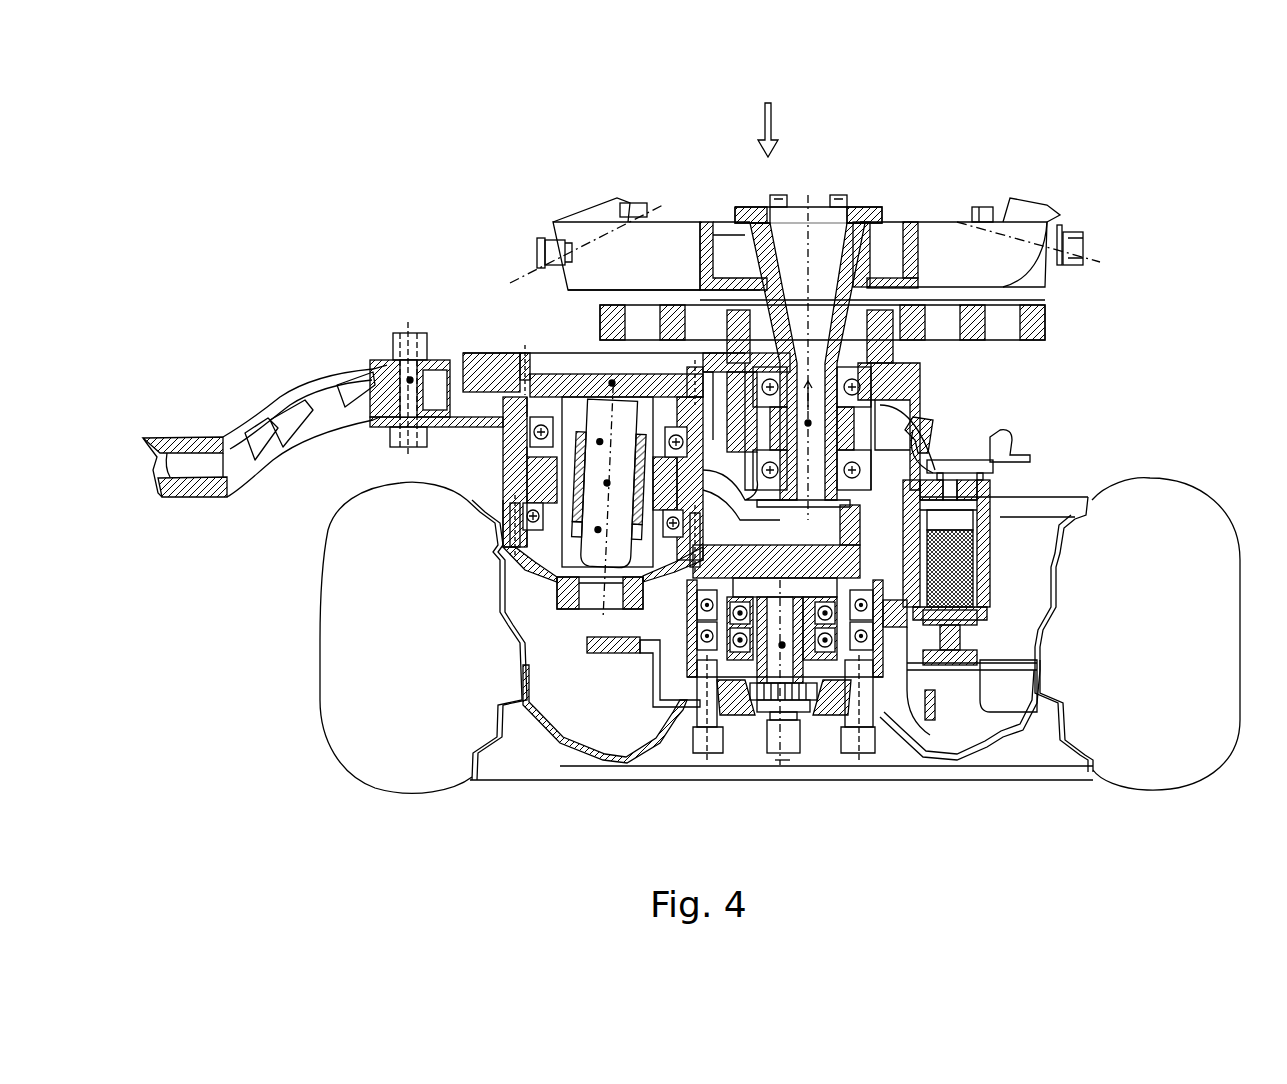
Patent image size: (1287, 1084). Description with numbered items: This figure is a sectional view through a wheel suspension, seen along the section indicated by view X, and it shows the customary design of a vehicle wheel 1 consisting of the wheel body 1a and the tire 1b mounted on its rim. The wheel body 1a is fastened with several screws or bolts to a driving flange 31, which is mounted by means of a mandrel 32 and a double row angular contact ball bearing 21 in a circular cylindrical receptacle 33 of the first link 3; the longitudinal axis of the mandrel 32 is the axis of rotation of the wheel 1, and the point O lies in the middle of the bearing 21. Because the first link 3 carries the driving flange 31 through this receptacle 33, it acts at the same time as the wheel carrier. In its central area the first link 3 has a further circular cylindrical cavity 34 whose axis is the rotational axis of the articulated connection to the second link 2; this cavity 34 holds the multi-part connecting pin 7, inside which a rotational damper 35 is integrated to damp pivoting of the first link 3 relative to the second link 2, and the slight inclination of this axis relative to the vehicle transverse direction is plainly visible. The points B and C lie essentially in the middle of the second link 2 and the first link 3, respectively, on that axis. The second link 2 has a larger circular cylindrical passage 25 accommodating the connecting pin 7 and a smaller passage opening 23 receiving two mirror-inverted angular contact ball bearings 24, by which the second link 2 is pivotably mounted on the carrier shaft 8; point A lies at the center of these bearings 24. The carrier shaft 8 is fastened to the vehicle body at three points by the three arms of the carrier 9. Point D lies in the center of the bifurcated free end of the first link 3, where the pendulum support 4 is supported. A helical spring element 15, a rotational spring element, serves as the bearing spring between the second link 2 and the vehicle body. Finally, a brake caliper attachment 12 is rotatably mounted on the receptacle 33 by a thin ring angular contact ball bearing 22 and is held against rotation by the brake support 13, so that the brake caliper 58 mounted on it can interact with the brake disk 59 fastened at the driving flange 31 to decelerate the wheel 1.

The vehicle wheel 1 is at (1130, 818).
The wheel body 1a is at (1028, 760).
The tire 1b is at (1167, 742).
The second link 2 is at (910, 378).
The first link 3 is at (1010, 470).
The pendulum support 4 is at (372, 365).
The connecting pin 7 is at (517, 355).
The carrier shaft 8 is at (856, 218).
The carrier 9 is at (938, 242).
The brake caliper attachment 12 is at (935, 680).
The brake support 13 is at (336, 383).
The spring element 15 is at (1045, 325).
The double row angular contact ball bearing 21 is at (867, 757).
The thin ring angular contact ball bearing 22 is at (660, 720).
The passage opening 23 is at (852, 420).
The angular contact ball bearings 24 is at (700, 265).
The circular cylindrical passage 25 is at (545, 255).
The driving flange 31 is at (702, 760).
The mandrel 32 is at (828, 745).
The circular cylindrical receptacle 33 is at (742, 745).
The circular cylindrical cavity 34 is at (503, 452).
The rotational damper 35 is at (520, 487).
The brake caliper 58 is at (990, 580).
The brake disk 59 is at (915, 755).
The point A is at (808, 392).
The point B is at (612, 383).
The point C is at (545, 570).
The point D is at (398, 355).
The point O is at (783, 650).
The view X is at (768, 115).